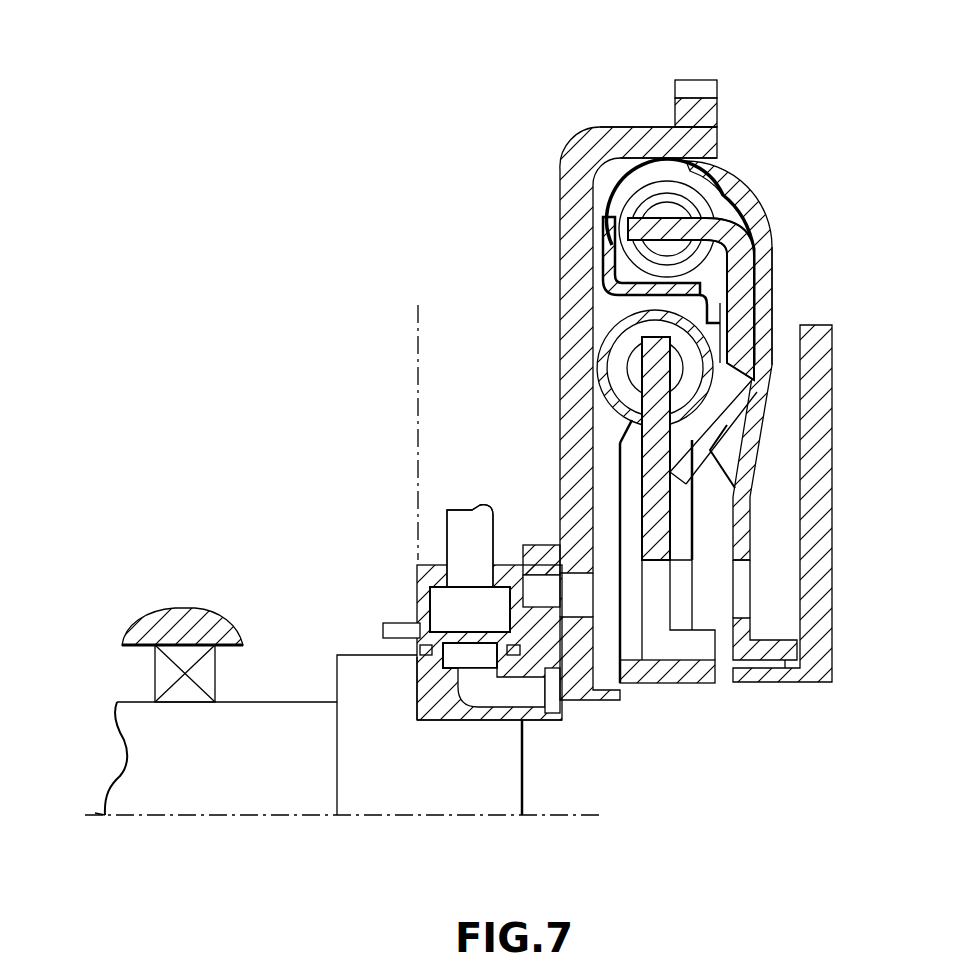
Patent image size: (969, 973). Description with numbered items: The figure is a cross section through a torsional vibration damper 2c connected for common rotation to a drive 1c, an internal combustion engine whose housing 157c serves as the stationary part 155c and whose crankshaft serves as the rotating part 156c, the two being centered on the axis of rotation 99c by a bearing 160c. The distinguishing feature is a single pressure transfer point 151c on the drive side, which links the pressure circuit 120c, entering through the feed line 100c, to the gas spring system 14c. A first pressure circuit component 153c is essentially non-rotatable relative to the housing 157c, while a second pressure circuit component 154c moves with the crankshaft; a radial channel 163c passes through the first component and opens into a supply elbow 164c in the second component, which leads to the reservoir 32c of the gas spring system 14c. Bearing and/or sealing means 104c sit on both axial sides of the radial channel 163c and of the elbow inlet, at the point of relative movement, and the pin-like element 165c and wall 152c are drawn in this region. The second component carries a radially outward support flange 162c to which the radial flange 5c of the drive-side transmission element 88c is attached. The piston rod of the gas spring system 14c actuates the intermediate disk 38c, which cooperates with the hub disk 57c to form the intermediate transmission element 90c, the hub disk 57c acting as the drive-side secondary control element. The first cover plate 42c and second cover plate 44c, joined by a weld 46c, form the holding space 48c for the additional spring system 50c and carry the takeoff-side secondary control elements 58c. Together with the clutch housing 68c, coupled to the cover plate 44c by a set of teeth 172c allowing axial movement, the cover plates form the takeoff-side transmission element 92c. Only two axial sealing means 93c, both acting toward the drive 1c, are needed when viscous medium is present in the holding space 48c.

The drive 1c is at (198, 779).
The torsional vibration damper 2c is at (601, 106).
The radial flange 5c is at (568, 258).
The gas spring system 14c is at (609, 365).
The reservoir 32c is at (606, 462).
The intermediate disk 38c is at (660, 485).
The first cover plate 42c is at (630, 127).
The second cover plate 44c is at (703, 175).
The weld 46c is at (708, 100).
The holding space 48c is at (757, 232).
The additional spring system 50c is at (697, 196).
The hub disk 57c is at (760, 290).
The takeoff-side secondary control elements 58c is at (740, 185).
The clutch housing 68c is at (826, 352).
The drive-side transmission element 88c is at (563, 157).
The intermediate transmission element 90c is at (660, 533).
The takeoff-side transmission element 92c is at (804, 286).
The axial sealing means 93c is at (745, 316).
The axis of rotation 99c is at (95, 814).
The feed line of the pressure circuit 100c is at (484, 530).
The bearing and/or sealing means 104c is at (565, 668).
The pressure circuit 120c is at (460, 542).
The pressure transfer point 151c is at (447, 680).
The bracket wall 152c is at (420, 657).
The first pressure circuit component 153c is at (428, 637).
The second pressure circuit component 154c is at (528, 740).
The stationary part 155c is at (427, 572).
The rotating part 156c is at (467, 793).
The housing 157c is at (193, 617).
The bearing 160c is at (177, 652).
The support flange 162c is at (695, 655).
The radial channel 163c is at (448, 607).
The supply elbow 164c is at (528, 695).
The retaining pin 165c is at (383, 630).
The set of teeth 172c is at (785, 660).